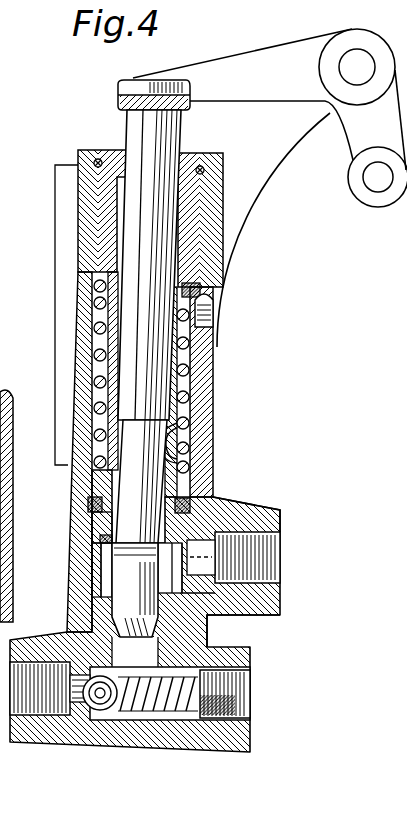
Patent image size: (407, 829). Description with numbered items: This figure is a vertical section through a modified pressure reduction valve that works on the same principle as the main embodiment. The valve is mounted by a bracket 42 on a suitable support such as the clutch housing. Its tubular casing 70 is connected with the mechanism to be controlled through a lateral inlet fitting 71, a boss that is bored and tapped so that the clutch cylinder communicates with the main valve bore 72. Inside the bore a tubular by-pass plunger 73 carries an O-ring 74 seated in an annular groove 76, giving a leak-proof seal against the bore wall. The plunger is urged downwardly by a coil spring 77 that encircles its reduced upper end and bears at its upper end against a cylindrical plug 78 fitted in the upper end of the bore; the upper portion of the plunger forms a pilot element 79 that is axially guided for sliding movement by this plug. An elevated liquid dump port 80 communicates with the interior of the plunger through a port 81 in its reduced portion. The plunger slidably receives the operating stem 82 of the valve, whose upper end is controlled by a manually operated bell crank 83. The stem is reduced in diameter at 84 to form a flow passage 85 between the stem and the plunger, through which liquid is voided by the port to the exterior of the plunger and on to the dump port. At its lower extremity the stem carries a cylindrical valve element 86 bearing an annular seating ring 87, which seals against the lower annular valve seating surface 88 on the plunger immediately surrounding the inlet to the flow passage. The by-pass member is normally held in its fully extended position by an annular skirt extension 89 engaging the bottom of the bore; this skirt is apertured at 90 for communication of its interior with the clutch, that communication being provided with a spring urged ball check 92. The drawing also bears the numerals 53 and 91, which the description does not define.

The bracket 42 is at (250, 202).
The inner sleeve 53 is at (118, 482).
The tubular casing 70 is at (203, 385).
The lateral inlet fitting 71 is at (282, 532).
The main valve bore 72 is at (107, 607).
The tubular by-pass plunger 73 is at (183, 472).
The O-ring 74 is at (187, 502).
The annular groove 76 is at (100, 522).
The coil spring 77 is at (187, 365).
The cylindrical plug 78 is at (100, 215).
The pilot element 79 is at (200, 287).
The liquid dump port 80 is at (212, 300).
The port 81 is at (187, 425).
The operating stem 82 is at (125, 323).
The bell crank 83 is at (248, 60).
The reduced diameter portion 84 is at (148, 492).
The flow passage 85 is at (88, 505).
The cylindrical valve element 86 is at (208, 627).
The annular seating ring 87 is at (100, 552).
The valve seating surface 88 is at (110, 542).
The annular skirt extension 89 is at (177, 592).
The aperture 90 is at (253, 563).
The threaded inlet 91 is at (27, 713).
The spring urged ball check 92 is at (100, 705).